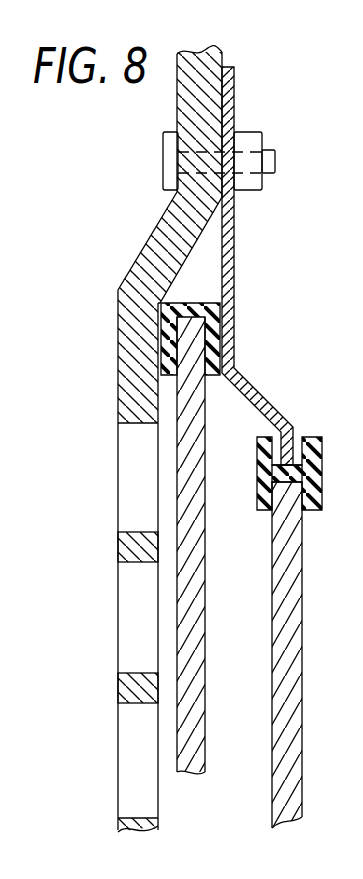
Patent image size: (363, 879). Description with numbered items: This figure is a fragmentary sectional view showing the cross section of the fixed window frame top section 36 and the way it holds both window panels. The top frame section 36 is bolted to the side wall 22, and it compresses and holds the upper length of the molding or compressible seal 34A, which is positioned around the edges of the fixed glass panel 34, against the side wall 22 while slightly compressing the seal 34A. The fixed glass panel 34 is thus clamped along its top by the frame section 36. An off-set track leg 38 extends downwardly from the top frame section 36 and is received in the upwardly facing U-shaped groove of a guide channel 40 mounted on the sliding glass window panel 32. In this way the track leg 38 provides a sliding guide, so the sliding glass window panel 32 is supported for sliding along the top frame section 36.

The side wall 22 is at (104, 690).
The sliding glass window panel 32 is at (272, 658).
The fixed glass panel 34 is at (205, 558).
The compressible seal 34A is at (188, 302).
The fixed window frame top section 36 is at (236, 316).
The off-set track leg 38 is at (310, 437).
The guide channel 40 is at (323, 483).